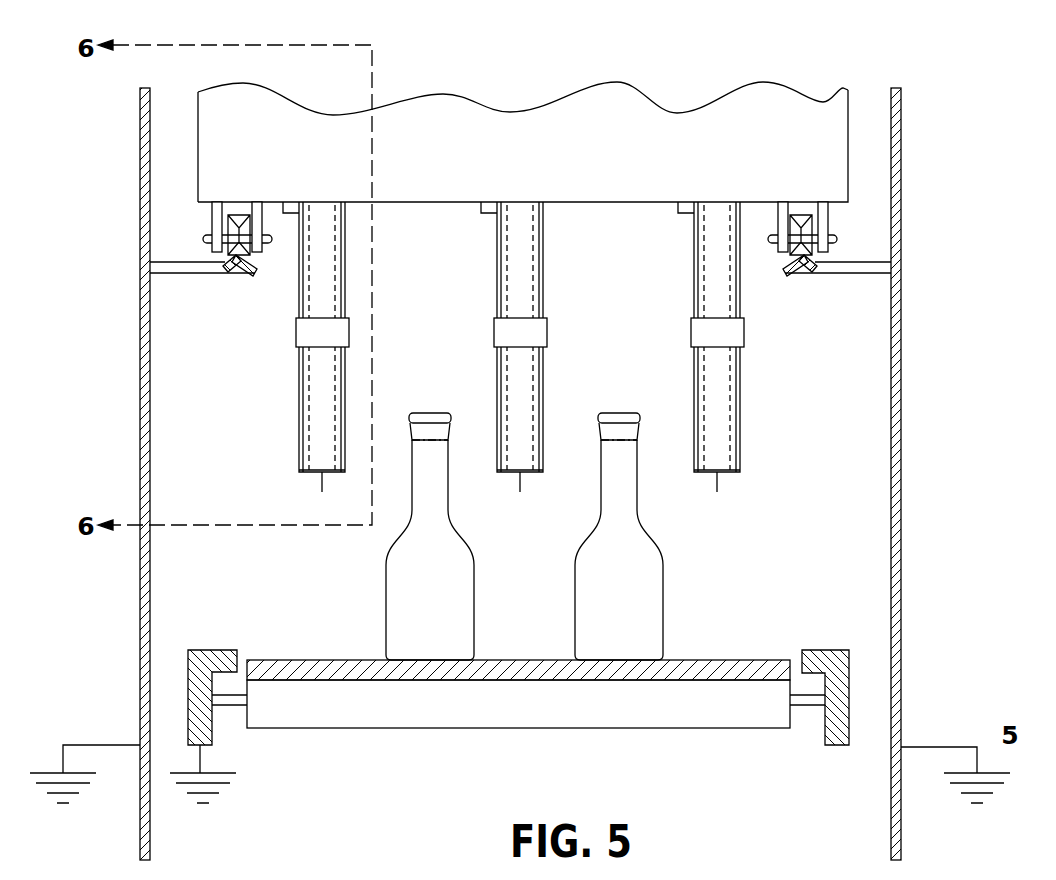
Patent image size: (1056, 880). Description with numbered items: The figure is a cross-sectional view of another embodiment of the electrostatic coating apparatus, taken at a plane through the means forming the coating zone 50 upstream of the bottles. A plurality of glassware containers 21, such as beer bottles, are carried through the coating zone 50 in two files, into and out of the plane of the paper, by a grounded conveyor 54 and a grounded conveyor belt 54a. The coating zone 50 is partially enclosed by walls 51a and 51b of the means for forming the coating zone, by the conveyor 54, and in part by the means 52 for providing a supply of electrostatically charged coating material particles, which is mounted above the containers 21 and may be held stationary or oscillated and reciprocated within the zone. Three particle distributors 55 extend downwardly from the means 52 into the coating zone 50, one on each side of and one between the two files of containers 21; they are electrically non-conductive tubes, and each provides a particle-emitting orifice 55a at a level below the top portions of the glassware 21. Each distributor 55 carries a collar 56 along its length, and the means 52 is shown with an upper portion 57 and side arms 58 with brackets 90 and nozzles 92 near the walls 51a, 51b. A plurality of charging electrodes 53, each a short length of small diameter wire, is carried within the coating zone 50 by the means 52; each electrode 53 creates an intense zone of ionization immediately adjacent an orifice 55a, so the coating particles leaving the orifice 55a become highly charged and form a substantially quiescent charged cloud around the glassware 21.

The glassware container 21 is at (385, 612).
The coating zone 50 is at (431, 305).
The wall 51a is at (140, 645).
The wall 51b is at (901, 512).
The means for providing charged coating material particles 52 is at (808, 73).
The charging electrode 53 is at (325, 495).
The grounded conveyor 54 is at (212, 650).
The grounded conveyor belt 54a is at (760, 660).
The particle distributor 55 is at (299, 376).
The particle-emitting orifice 55a is at (316, 475).
The collar 56 is at (350, 325).
The manifold 57 is at (442, 110).
The support arm 58 is at (226, 287).
The bracket 90 is at (207, 228).
The sensor nozzle 92 is at (253, 275).